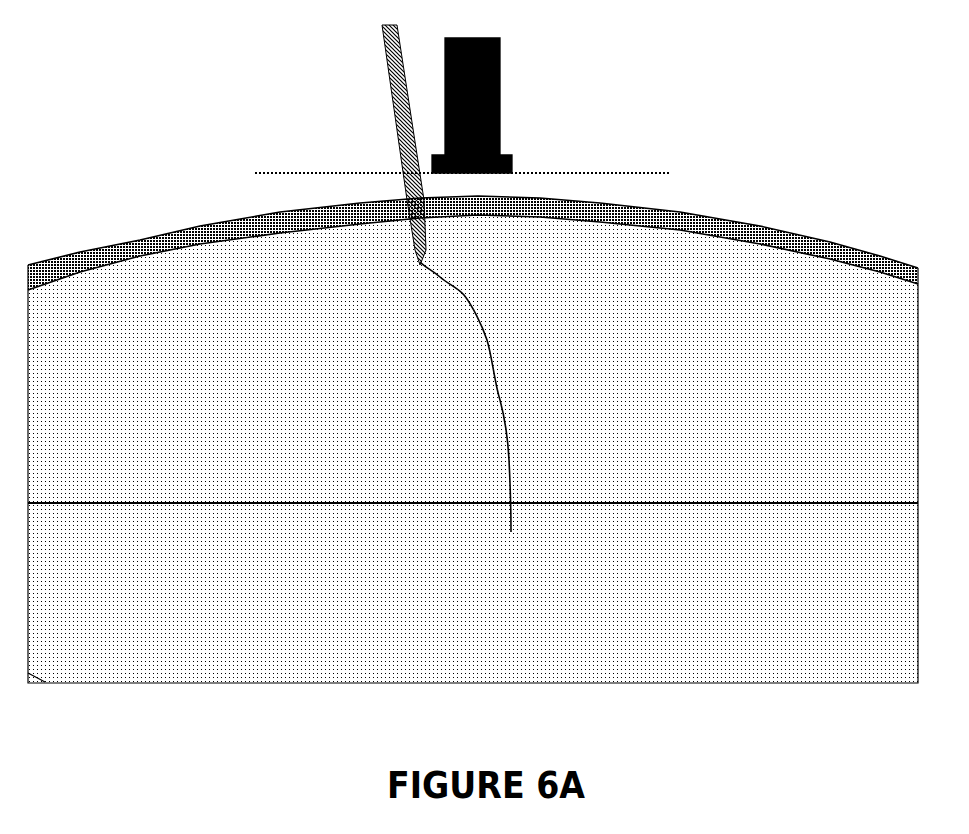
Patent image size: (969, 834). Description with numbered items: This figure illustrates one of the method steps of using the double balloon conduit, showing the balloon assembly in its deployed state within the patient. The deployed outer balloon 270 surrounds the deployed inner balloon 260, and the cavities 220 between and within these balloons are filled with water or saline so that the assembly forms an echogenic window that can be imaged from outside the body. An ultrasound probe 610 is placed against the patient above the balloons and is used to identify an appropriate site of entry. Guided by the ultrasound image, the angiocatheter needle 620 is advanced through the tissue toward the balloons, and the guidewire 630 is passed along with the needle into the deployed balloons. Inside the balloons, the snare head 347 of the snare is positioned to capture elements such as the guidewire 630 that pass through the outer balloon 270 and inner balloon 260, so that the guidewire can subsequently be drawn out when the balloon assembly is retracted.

The ultrasound probe 610 is at (500, 67).
The angiocatheter needle 620 is at (383, 35).
The guidewire 630 is at (490, 383).
The outer balloon 270 is at (705, 213).
The inner balloon 260 is at (740, 237).
The cavities 220 is at (252, 223).
The snare head 347 is at (192, 500).